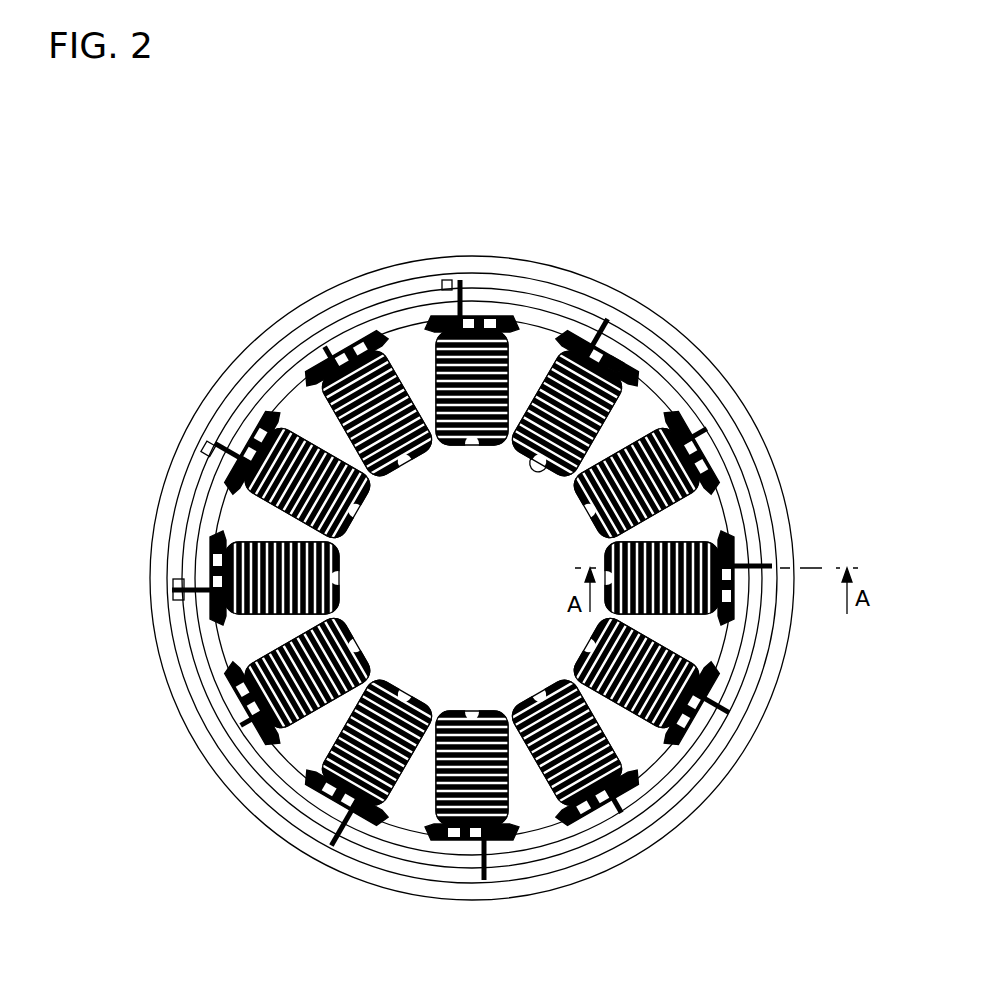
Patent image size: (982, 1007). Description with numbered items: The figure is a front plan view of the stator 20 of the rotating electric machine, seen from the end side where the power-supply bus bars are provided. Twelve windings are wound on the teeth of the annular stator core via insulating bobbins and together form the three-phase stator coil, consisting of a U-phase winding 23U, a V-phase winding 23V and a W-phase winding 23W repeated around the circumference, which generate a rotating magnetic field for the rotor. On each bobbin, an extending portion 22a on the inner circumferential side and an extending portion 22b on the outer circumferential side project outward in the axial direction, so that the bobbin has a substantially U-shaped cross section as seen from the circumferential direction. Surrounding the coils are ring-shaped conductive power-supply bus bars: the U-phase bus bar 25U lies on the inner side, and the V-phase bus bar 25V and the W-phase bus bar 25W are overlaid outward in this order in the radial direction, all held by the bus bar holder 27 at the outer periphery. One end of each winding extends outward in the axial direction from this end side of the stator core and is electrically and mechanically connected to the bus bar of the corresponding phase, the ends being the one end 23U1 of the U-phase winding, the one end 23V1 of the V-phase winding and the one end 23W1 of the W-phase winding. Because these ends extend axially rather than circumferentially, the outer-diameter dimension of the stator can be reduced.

The stator 20 is at (290, 322).
The extending portion 22a is at (535, 468).
The extending portion 22b is at (618, 350).
The U-phase winding 23U is at (332, 630).
The V-phase winding 23V is at (383, 700).
The W-phase winding 23W is at (240, 543).
The one end of the U-phase winding 23U1 is at (247, 730).
The one end of the V-phase winding 23V1 is at (340, 848).
The one end of the W-phase winding 23W1 is at (180, 597).
The U-phase bus bar 25U is at (290, 787).
The V-phase bus bar 25V is at (207, 478).
The W-phase bus bar 25W is at (185, 655).
The bus bar holder 27 is at (753, 740).